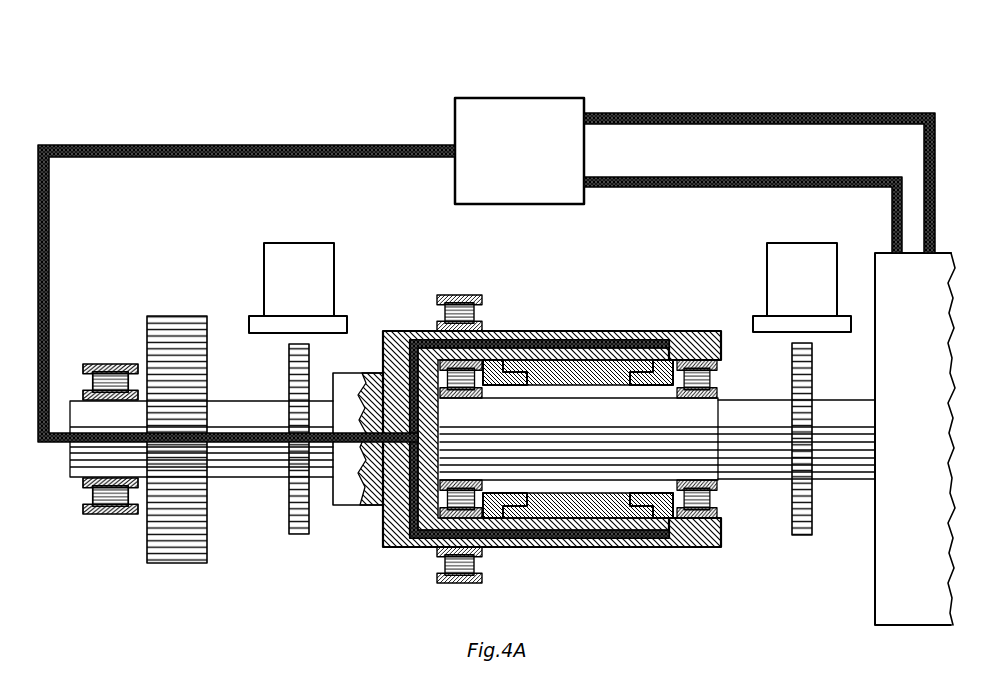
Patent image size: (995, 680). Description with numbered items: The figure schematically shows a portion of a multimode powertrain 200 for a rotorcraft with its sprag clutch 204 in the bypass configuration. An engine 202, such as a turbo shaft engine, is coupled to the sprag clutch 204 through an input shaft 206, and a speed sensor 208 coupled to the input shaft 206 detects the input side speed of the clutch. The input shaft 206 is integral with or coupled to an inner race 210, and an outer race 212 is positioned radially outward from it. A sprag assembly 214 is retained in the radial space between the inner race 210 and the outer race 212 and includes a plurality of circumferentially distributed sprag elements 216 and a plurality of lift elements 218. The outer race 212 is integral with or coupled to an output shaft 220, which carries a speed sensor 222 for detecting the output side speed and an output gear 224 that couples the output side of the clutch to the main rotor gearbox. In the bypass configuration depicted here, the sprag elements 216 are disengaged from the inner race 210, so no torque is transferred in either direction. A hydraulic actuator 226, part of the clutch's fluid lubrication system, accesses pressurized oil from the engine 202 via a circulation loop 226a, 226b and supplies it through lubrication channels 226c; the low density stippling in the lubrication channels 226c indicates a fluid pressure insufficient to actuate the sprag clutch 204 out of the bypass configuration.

The multimode powertrain 200 is at (746, 84).
The engine 202 is at (876, 594).
The sprag clutch 204 is at (642, 556).
The input shaft 206 is at (765, 472).
The speed sensor 208 is at (767, 283).
The inner race 210 is at (610, 410).
The outer race 212 is at (586, 331).
The sprag assembly 214 is at (569, 532).
The sprag elements 216 is at (547, 365).
The lift elements 218 is at (492, 372).
The output shaft 220 is at (258, 472).
The speed sensor 222 is at (325, 263).
The output gear 224 is at (178, 316).
The hydraulic actuator 226 is at (556, 110).
The circulation loop 226a is at (641, 118).
The circulation loop 226b is at (650, 188).
The lubrication channels 226c is at (45, 250).